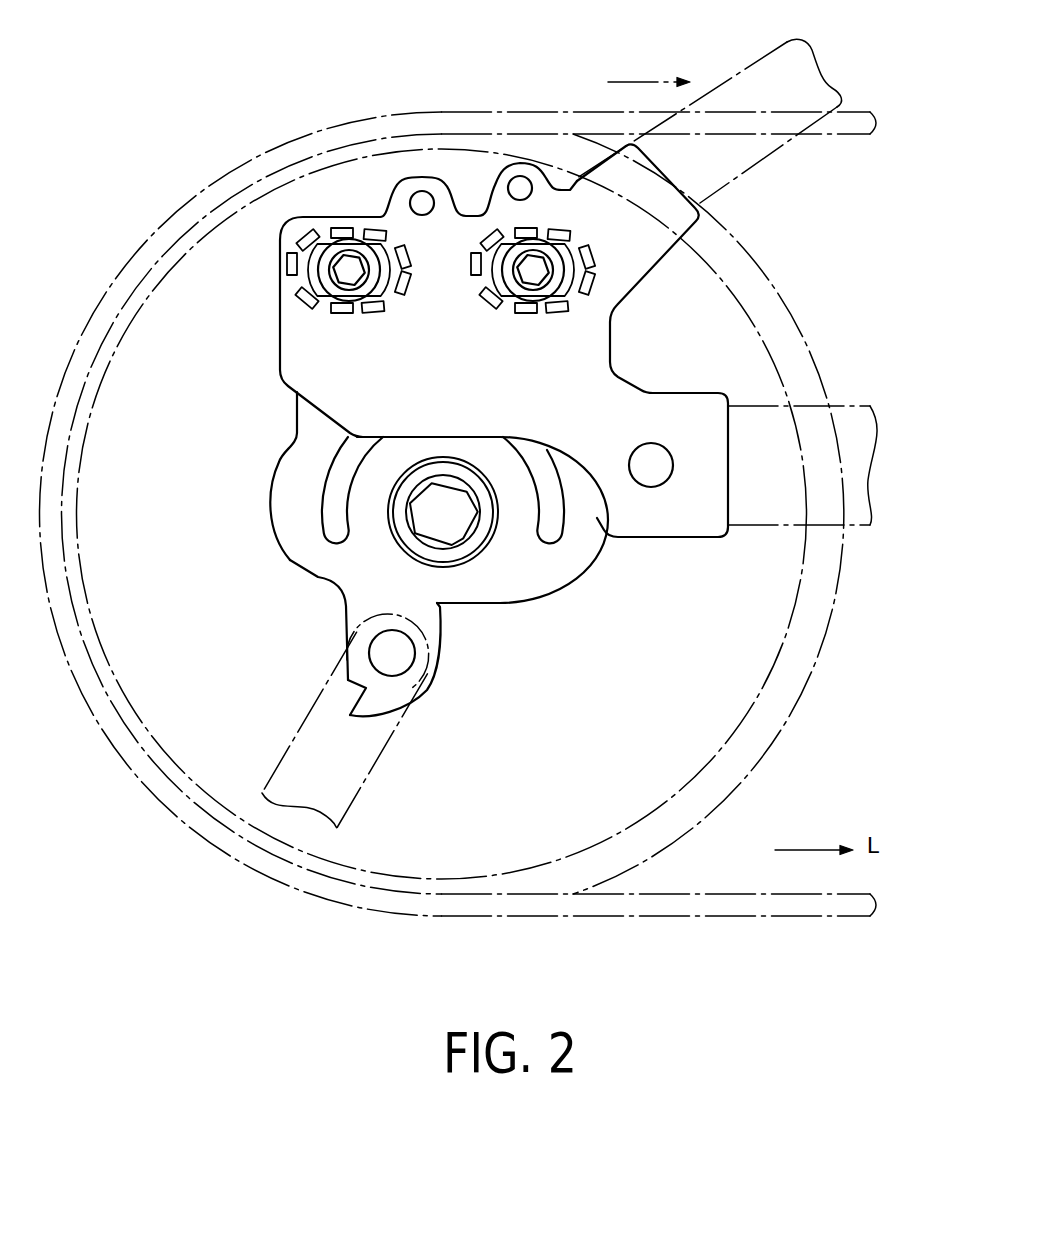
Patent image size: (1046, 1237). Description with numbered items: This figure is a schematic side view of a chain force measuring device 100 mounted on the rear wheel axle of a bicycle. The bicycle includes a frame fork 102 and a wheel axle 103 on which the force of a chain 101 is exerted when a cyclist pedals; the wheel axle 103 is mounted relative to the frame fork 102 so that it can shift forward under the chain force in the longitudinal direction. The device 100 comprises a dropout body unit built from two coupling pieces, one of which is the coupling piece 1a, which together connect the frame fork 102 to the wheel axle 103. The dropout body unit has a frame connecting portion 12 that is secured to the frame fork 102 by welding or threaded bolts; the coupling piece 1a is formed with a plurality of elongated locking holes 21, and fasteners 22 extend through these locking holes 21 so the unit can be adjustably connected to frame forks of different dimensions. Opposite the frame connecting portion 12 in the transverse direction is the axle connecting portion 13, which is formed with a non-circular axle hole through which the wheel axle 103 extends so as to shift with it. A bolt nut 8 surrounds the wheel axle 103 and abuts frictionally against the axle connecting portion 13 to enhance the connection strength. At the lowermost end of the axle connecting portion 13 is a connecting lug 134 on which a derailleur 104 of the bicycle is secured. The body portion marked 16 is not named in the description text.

The coupling piece 1a is at (446, 197).
The bolt nut 8 is at (467, 550).
The frame connecting portion 12 is at (270, 272).
The axle connecting portion 13 is at (317, 583).
The positioning body 16 is at (297, 405).
The elongated locking holes 21 is at (317, 258).
The fasteners 22 is at (333, 287).
The chain force measuring device 100 is at (367, 188).
The chain 101 is at (514, 126).
The frame fork 102 is at (772, 166).
The wheel axle 103 is at (433, 517).
The derailleur 104 is at (294, 768).
The connecting lug 134 is at (434, 687).